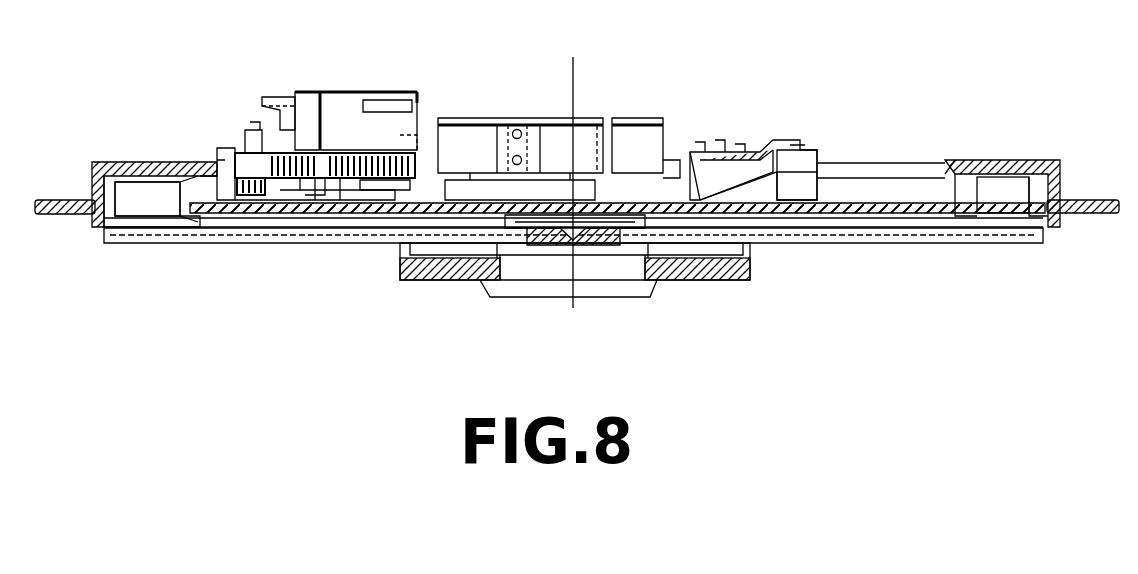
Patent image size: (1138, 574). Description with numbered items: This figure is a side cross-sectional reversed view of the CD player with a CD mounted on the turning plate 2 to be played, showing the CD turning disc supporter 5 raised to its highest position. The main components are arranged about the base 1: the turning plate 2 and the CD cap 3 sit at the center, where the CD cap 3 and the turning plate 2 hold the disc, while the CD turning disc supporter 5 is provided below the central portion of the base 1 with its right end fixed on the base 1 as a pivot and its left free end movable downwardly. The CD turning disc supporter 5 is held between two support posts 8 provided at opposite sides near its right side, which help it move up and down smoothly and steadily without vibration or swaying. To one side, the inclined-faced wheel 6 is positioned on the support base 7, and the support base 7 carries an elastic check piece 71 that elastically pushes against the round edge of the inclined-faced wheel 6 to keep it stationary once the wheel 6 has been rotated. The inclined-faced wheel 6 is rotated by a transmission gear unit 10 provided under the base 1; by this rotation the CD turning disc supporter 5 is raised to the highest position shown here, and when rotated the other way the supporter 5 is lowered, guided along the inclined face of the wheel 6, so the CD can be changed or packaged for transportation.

The base 1 is at (1000, 160).
The turning plate 2 is at (898, 236).
The CD cap 3 is at (710, 266).
The CD turning disc supporter 5 is at (583, 140).
The inclined-faced wheel 6 is at (305, 130).
The support base 7 is at (350, 95).
The elastic check piece 71 is at (388, 105).
The support posts 8 is at (527, 130).
The transmission gear unit 10 is at (222, 148).